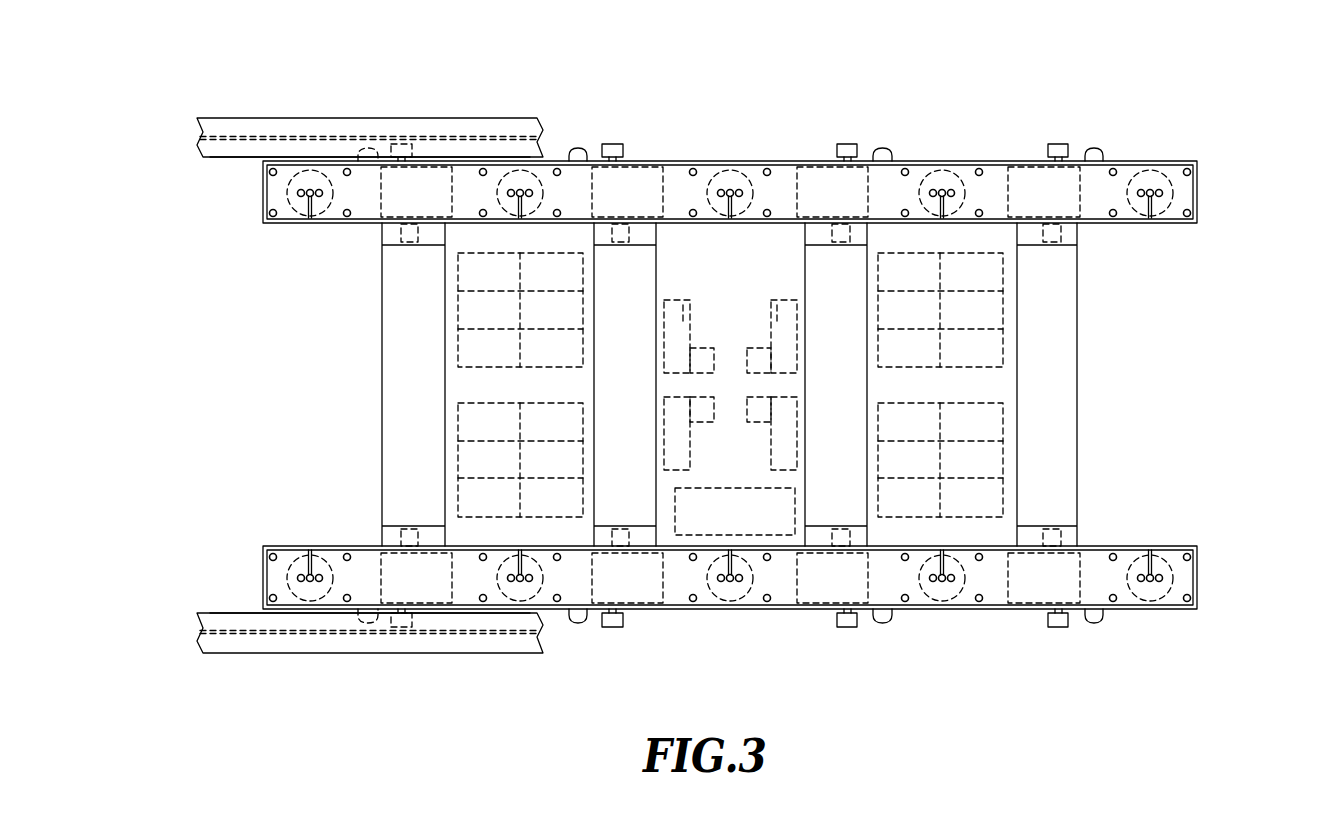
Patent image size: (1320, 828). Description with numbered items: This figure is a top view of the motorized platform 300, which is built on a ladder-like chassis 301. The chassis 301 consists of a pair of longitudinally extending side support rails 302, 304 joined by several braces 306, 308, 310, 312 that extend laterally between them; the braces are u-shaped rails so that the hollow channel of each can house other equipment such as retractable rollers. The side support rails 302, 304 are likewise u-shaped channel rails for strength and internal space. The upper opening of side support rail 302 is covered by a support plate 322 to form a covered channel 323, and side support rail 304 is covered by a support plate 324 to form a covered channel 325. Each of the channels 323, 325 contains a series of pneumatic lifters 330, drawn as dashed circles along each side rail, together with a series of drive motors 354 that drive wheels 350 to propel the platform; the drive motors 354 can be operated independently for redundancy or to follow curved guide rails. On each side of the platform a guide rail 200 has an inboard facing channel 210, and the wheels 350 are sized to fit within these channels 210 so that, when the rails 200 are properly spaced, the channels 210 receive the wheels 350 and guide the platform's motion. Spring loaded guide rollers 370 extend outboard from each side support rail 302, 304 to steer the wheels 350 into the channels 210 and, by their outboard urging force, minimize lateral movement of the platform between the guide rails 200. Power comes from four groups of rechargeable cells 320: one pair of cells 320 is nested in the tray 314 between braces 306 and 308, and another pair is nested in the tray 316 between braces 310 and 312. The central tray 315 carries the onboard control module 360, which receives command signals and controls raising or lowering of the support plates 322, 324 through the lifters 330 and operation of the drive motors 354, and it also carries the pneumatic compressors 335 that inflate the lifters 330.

The guide rail 200 is at (220, 118).
The inboard facing channel 210 is at (227, 154).
The motorized platform 300 is at (1187, 81).
The chassis 301 is at (382, 258).
The side support rail 302 is at (1198, 162).
The side support rail 304 is at (1198, 610).
The brace 306 is at (1068, 374).
The brace 308 is at (852, 395).
The brace 310 is at (641, 395).
The brace 312 is at (430, 395).
The tray 314 is at (528, 395).
The tray 315 is at (746, 395).
The tray 316 is at (939, 395).
The cells 320 is at (571, 323).
The support plate 322 is at (1185, 190).
The covered channel 323 is at (765, 194).
The support plate 324 is at (1185, 582).
The covered channel 325 is at (887, 579).
The pneumatic lifter 330 is at (297, 210).
The pneumatic compressor 335 is at (775, 316).
The wheel 350 is at (405, 143).
The drive motor 354 is at (433, 202).
The control module 360 is at (771, 521).
The spring loaded guide roller 370 is at (364, 142).